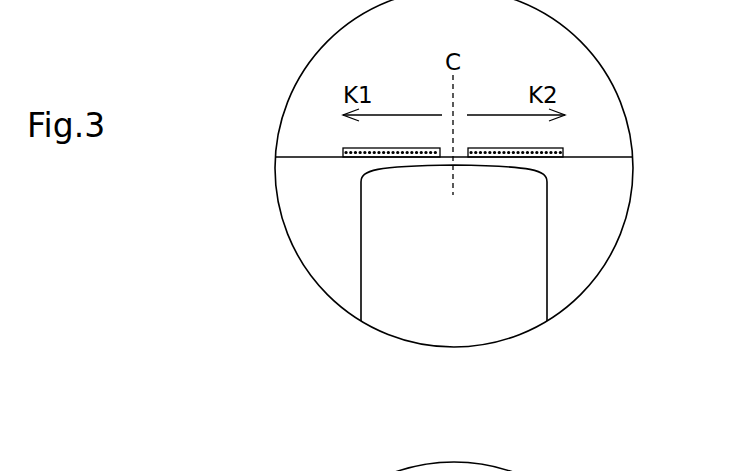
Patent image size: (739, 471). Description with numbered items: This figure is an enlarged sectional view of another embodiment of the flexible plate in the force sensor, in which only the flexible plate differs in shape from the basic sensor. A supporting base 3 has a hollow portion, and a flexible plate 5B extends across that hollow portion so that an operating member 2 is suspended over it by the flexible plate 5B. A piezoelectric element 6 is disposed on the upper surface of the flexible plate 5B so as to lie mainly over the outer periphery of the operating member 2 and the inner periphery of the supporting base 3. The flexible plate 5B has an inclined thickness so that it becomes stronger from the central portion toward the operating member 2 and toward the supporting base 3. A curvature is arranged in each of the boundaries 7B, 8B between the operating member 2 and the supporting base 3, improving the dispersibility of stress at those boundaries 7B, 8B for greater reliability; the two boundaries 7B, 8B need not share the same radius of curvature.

The operating member 2 is at (331, 245).
The supporting base 3 is at (598, 241).
The flexible plate 5B is at (413, 158).
The piezoelectric element 6 is at (563, 148).
The boundary 7B is at (366, 181).
The boundary 8B is at (540, 183).